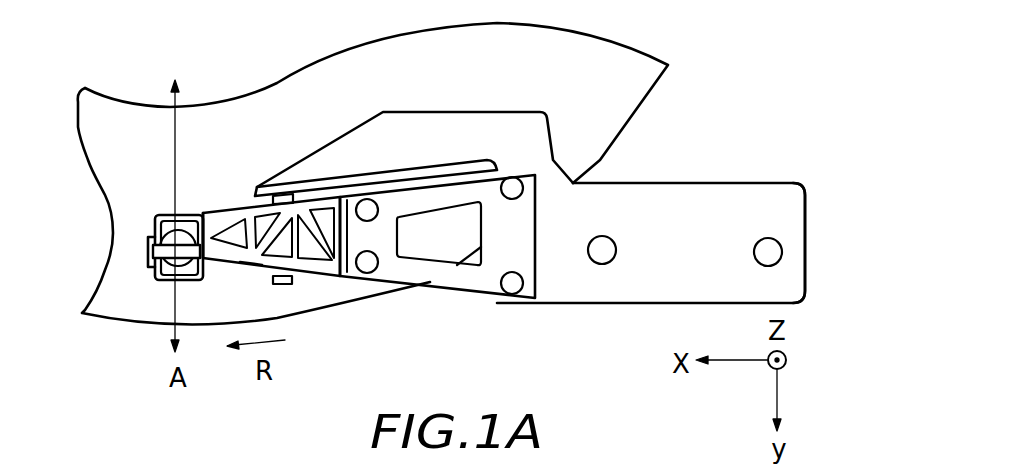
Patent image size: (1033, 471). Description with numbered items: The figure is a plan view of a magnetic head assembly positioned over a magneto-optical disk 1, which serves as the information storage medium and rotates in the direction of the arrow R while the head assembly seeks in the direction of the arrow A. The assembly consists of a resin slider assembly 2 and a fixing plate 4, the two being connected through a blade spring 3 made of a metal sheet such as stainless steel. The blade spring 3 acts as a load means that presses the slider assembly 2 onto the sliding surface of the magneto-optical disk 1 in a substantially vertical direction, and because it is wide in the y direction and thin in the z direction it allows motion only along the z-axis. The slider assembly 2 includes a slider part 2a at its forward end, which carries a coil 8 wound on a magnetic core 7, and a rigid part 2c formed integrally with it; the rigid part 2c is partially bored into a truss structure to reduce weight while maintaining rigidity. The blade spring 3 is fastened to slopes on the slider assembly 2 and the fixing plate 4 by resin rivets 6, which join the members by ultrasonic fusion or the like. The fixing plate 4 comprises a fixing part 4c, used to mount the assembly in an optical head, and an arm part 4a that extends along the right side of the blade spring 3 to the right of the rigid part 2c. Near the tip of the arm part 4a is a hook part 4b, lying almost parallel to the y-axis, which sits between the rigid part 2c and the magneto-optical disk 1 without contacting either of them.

The magneto-optical disk 1 is at (320, 66).
The slider assembly 2 is at (233, 206).
The slider part 2a is at (172, 215).
The rigid part 2c is at (247, 264).
The blade spring 3 is at (441, 290).
The fixing plate 4 is at (683, 183).
The arm part 4a is at (368, 119).
The hook part 4b is at (290, 280).
The fixing part 4c is at (744, 183).
The resin rivets 6 is at (373, 219).
The magnetic core 7 is at (153, 251).
The coil 8 is at (155, 229).